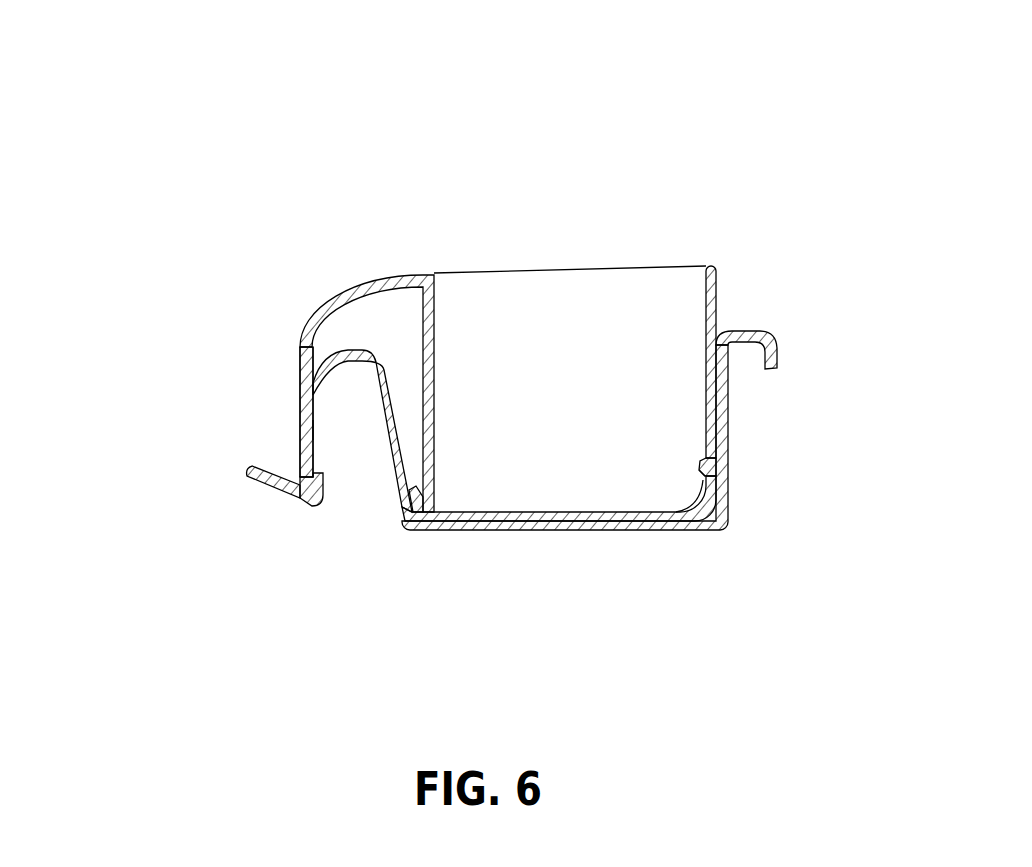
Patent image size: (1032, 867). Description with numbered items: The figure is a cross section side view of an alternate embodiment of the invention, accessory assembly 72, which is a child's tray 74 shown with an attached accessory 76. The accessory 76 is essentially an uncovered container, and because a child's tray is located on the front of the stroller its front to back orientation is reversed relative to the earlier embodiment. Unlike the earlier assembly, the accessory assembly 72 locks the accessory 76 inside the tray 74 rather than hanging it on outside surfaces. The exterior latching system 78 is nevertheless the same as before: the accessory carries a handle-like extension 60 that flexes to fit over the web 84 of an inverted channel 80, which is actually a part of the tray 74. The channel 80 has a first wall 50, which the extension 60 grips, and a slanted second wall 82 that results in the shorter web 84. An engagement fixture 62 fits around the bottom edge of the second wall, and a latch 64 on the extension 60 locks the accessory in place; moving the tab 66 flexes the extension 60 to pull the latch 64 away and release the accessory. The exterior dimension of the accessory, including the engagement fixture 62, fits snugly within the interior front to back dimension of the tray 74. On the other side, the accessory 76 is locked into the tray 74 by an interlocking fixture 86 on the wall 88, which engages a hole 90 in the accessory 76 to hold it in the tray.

The first wall 50 is at (318, 428).
The handle-like extension 60 is at (345, 320).
The engagement fixture 62 is at (414, 485).
The latch 64 is at (297, 498).
The tab 66 is at (250, 468).
The accessory assembly 72 is at (658, 122).
The child's tray 74 is at (648, 532).
The accessory 76 is at (718, 288).
The exterior latching system 78 is at (301, 300).
The inverted channel 80 is at (340, 295).
The slanted second wall 82 is at (375, 400).
The web 84 is at (276, 312).
The interlocking fixture 86 is at (712, 471).
The wall 88 is at (730, 400).
The hole 90 is at (706, 462).